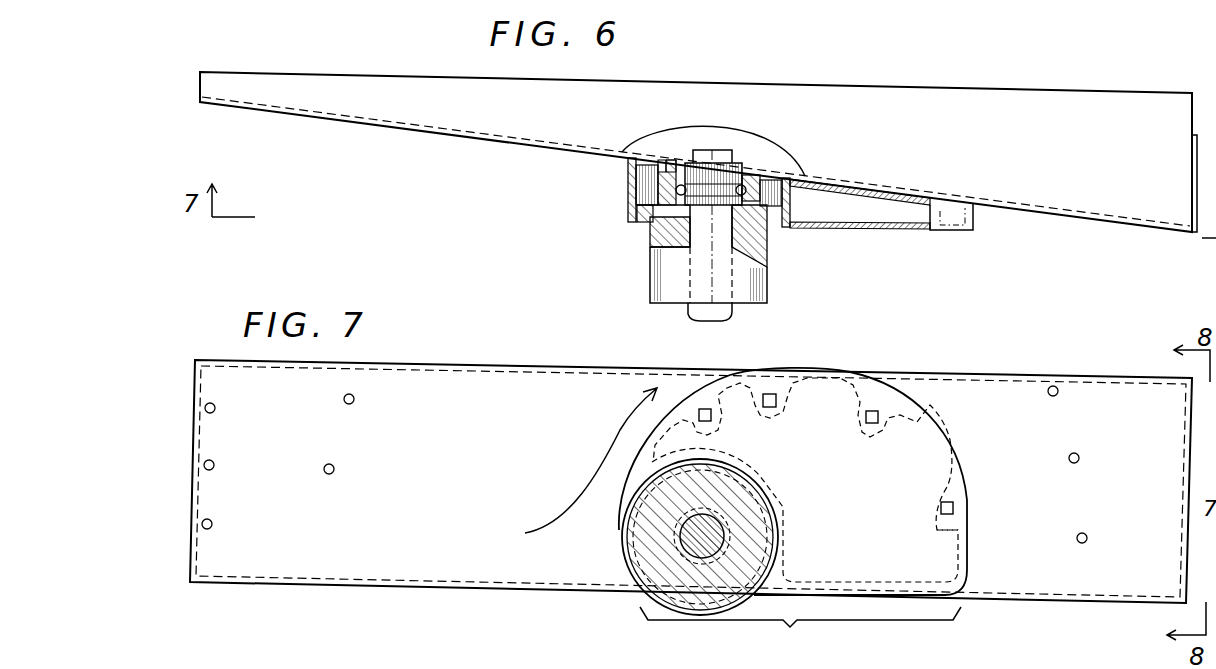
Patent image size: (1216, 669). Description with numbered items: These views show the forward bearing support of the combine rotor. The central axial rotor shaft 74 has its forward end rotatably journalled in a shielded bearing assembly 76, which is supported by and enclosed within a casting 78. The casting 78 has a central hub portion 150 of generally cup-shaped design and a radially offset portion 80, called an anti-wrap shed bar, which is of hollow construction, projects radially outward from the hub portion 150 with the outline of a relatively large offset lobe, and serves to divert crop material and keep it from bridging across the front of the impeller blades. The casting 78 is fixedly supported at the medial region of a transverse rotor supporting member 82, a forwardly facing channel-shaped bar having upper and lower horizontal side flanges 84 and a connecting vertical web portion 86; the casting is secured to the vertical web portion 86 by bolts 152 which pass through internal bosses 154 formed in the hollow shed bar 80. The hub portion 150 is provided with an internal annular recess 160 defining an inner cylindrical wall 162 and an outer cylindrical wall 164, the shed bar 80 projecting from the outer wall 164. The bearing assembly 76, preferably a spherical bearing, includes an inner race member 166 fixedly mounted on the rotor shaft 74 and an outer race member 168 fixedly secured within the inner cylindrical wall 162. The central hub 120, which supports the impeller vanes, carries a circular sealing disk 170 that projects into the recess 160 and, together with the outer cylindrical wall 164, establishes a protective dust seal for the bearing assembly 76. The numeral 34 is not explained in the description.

In FIG. 6, the frame 34 is at (850, 285).
In FIG. 6, the rotor shaft 74 is at (704, 156).
In FIG. 7, the rotor shaft 74 is at (749, 536).
In FIG. 6, the bearing assembly 76 is at (748, 181).
In FIG. 6, the casting 78 is at (621, 194).
In FIG. 7, the casting 78 is at (800, 628).
In FIG. 6, the anti-wrap shed bar 80 is at (884, 208).
In FIG. 7, the anti-wrap shed bar 80 is at (962, 462).
In FIG. 6, the transverse rotor supporting member 82 is at (1073, 140).
In FIG. 7, the transverse rotor supporting member 82 is at (477, 458).
In FIG. 6, the horizontal side flanges 84 is at (1196, 117).
In FIG. 6, the vertical web portion 86 is at (247, 82).
In FIG. 6, the central hub 120 is at (667, 253).
In FIG. 6, the central hub portion 150 is at (792, 206).
In FIG. 7, the central hub portion 150 is at (786, 508).
In FIG. 7, the bolts 152 is at (870, 420).
In FIG. 7, the internal bosses 154 is at (945, 514).
In FIG. 6, the internal annular recess 160 is at (648, 182).
In FIG. 6, the inner cylindrical wall 162 is at (648, 160).
In FIG. 6, the outer cylindrical wall 164 is at (790, 177).
In FIG. 6, the inner race member 166 is at (716, 178).
In FIG. 6, the outer race member 168 is at (672, 166).
In FIG. 6, the circular sealing disk 170 is at (648, 221).
In FIG. 7, the circular sealing disk 170 is at (640, 540).